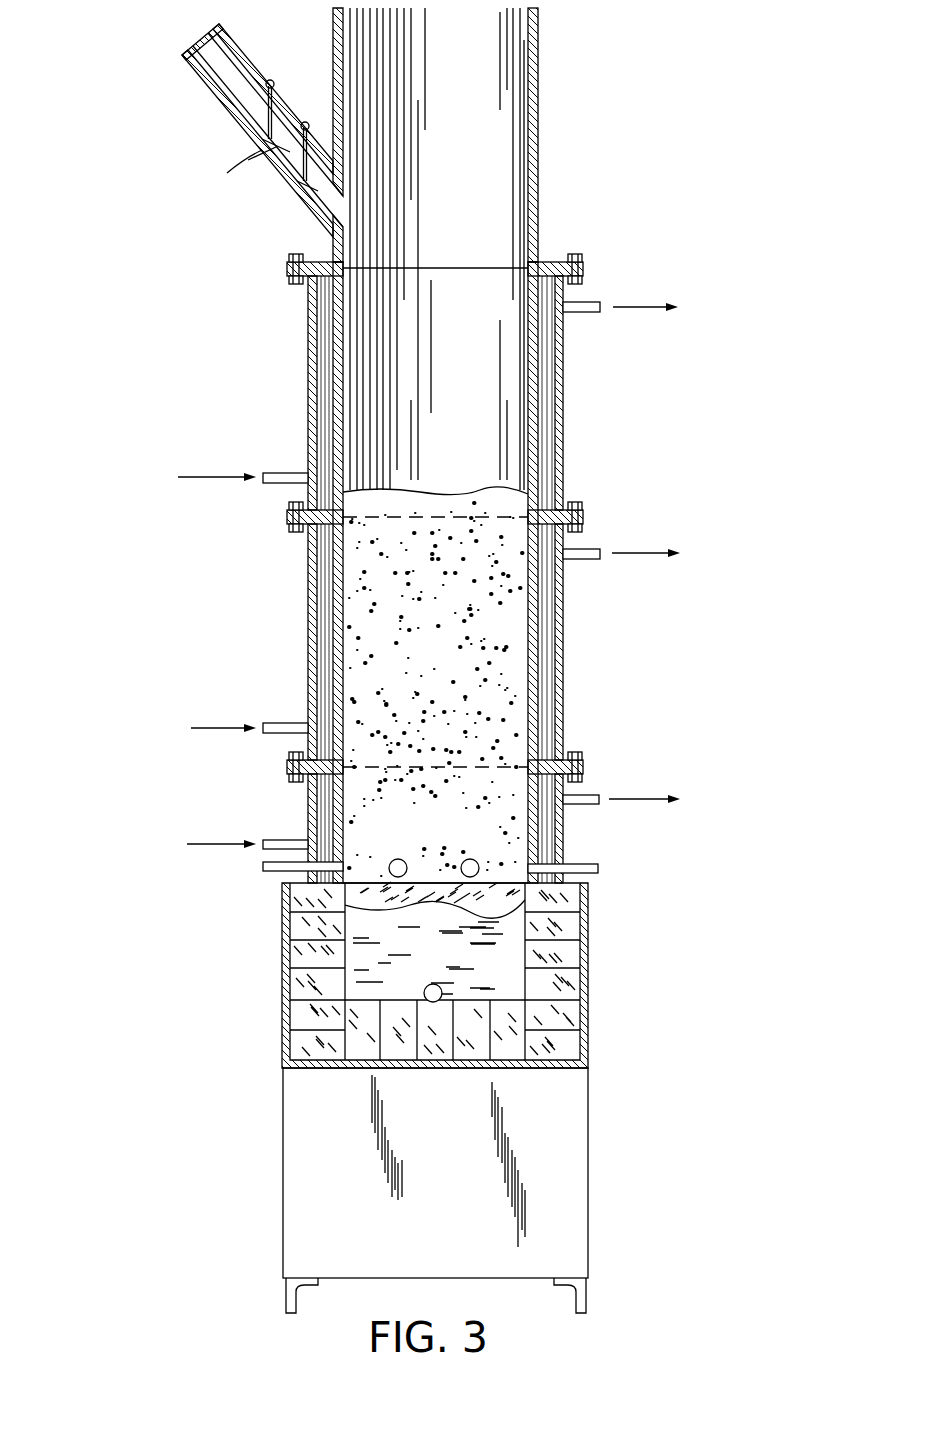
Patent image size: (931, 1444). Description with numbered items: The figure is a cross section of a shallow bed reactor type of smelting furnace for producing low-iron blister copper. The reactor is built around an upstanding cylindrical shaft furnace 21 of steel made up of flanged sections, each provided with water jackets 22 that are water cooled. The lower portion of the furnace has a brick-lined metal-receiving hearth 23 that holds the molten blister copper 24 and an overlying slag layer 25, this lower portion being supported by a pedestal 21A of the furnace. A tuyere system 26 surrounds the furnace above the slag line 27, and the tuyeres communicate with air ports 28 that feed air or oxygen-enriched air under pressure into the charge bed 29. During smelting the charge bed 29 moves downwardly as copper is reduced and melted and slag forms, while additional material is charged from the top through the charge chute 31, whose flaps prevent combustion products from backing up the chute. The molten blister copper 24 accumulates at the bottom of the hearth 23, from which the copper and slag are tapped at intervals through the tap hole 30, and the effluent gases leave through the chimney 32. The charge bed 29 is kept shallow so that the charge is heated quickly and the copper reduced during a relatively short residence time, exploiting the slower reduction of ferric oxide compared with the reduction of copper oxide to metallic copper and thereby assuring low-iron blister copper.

The shaft furnace 21 is at (590, 412).
The pedestal 21A is at (283, 1163).
The water jackets 22 is at (308, 358).
The hearth 23 is at (515, 961).
The blister copper 24 is at (458, 971).
The slag layer 25 is at (433, 914).
The tuyere system 26 is at (673, 869).
The slag line 27 is at (368, 882).
The air ports 28 is at (469, 859).
The charge bed 29 is at (449, 663).
The tap hole 30 is at (433, 1002).
The charge chute 31 is at (235, 118).
The chimney 32 is at (539, 124).